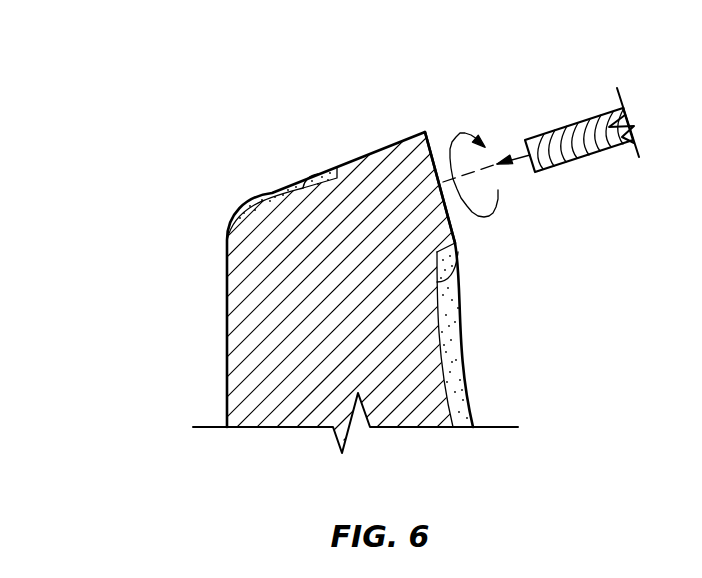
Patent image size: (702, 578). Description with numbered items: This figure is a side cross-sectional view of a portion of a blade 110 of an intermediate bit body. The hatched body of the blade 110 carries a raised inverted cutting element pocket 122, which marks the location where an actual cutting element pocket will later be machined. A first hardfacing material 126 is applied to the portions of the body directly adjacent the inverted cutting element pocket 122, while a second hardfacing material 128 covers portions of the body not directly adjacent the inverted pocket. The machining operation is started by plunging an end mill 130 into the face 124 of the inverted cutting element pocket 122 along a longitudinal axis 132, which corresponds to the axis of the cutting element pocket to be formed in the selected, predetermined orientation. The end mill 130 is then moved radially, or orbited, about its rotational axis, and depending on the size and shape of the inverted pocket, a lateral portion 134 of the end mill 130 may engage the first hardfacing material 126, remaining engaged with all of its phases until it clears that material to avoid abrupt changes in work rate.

The blade 110 is at (134, 158).
The inverted cutting element pocket 122 is at (400, 160).
The face 124 is at (437, 170).
The first hardfacing material 126 is at (325, 167).
The second hardfacing material 128 is at (263, 188).
The end mill 130 is at (607, 147).
The longitudinal axis 132 is at (483, 172).
The lateral portion 134 is at (568, 124).